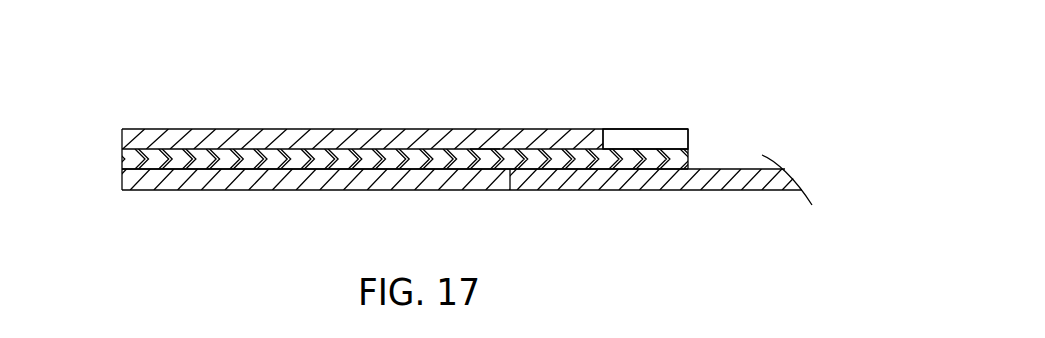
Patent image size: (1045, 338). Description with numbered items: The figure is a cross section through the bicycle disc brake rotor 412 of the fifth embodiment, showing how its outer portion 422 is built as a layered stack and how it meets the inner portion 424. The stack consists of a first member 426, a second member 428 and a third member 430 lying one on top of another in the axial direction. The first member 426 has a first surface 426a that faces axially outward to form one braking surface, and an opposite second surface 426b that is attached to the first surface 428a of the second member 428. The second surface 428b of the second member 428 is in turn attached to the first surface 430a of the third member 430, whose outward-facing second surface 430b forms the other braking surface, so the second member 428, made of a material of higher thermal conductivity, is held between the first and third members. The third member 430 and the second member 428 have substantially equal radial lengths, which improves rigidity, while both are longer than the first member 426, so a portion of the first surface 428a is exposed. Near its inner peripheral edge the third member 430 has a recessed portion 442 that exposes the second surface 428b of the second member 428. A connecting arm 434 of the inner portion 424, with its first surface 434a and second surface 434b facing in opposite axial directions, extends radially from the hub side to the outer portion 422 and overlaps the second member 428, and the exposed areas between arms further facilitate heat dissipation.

The bicycle disc brake rotor 412 is at (162, 78).
The outer portion 422 is at (167, 191).
The inner portion 424 is at (558, 191).
The first member 426 is at (122, 179).
The first surface of first member 426a is at (233, 192).
The second surface of first member 426b is at (267, 168).
The second member 428 is at (122, 159).
The first surface of second member 428a is at (343, 171).
The second surface of second member 428b is at (667, 152).
The third member 430 is at (122, 140).
The first surface of third member 430a is at (476, 155).
The second surface of third member 430b is at (390, 128).
The connecting arm 434 is at (632, 192).
The first surface of connecting arm 434a is at (743, 191).
The second surface of connecting arm 434b is at (725, 168).
The recessed portion 442 is at (597, 145).